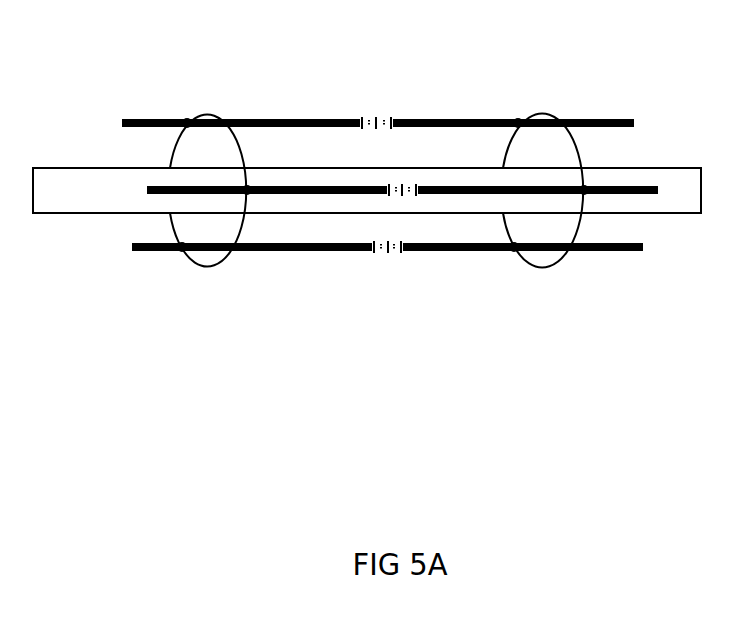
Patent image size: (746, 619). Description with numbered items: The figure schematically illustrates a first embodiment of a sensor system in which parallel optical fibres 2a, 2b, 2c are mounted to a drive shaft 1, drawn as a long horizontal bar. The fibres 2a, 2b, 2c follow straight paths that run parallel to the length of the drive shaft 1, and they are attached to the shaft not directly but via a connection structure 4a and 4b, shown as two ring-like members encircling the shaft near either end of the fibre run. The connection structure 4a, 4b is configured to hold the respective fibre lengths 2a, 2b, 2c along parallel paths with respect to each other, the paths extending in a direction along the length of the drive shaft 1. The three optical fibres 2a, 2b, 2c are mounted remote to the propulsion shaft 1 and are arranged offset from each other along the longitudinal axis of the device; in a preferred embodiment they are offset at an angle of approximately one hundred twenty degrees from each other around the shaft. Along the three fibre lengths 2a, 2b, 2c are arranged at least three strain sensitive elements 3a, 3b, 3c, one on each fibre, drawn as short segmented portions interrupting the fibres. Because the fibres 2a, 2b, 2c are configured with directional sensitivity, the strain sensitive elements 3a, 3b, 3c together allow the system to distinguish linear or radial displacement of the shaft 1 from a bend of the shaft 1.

The drive shaft 1 is at (63, 188).
The optical fibre 2a is at (432, 121).
The optical fibre 2b is at (462, 185).
The optical fibre 2c is at (450, 253).
The strain sensitive element 3a is at (378, 118).
The strain sensitive element 3b is at (393, 198).
The strain sensitive element 3c is at (391, 253).
The connection structure 4a is at (201, 268).
The connection structure 4b is at (540, 268).